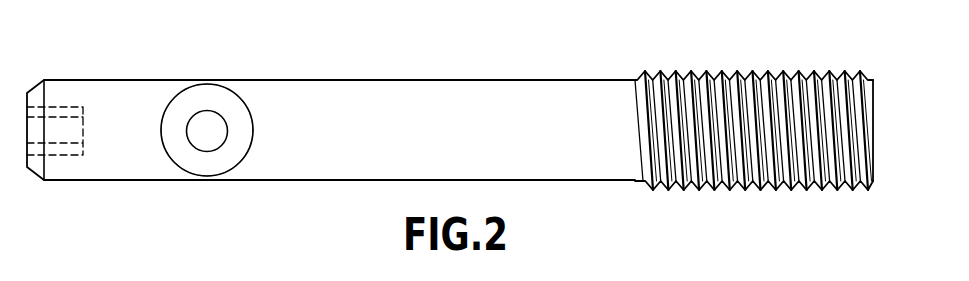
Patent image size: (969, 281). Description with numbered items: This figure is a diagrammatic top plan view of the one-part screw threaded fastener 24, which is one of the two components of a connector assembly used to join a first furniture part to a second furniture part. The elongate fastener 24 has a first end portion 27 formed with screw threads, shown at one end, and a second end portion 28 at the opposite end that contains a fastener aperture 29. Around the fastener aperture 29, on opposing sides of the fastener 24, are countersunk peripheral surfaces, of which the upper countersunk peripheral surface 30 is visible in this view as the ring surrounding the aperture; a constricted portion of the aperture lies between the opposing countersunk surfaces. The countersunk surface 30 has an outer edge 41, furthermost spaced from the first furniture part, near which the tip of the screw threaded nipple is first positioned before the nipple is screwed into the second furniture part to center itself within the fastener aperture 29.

The one-part screw threaded fastener 24 is at (450, 100).
The first end portion 27 is at (730, 103).
The second end portion 28 is at (535, 95).
The fastener aperture 29 is at (210, 120).
The countersunk peripheral surface 30 is at (237, 116).
The outer edge 41 is at (162, 111).